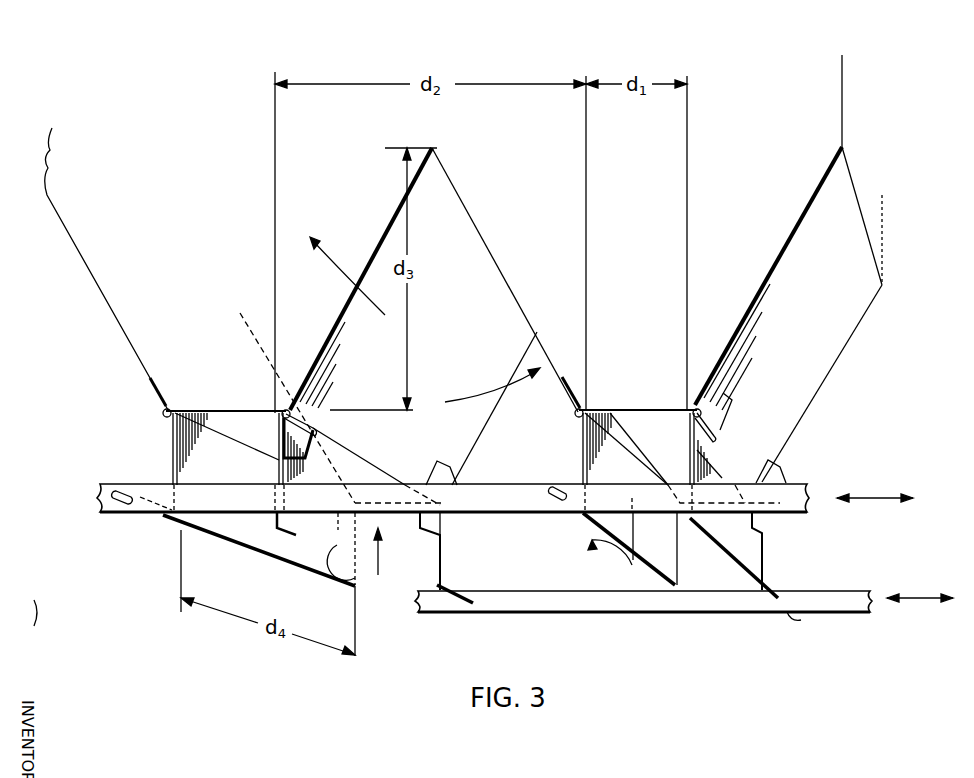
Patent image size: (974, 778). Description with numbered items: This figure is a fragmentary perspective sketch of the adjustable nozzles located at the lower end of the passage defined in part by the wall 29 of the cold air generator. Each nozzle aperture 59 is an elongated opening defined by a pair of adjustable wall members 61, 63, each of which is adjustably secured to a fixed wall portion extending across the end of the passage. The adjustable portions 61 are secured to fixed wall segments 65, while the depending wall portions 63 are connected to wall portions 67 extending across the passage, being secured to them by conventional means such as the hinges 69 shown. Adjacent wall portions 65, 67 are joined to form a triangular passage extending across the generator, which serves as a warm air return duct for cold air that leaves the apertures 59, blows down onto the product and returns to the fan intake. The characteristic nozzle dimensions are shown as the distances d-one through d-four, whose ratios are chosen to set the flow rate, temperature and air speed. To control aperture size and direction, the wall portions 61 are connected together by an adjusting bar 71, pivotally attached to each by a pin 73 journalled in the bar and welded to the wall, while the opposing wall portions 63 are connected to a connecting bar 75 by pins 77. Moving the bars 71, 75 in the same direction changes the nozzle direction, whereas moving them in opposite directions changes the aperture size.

The wall 29 is at (782, 170).
The aperture 59 is at (236, 426).
The adjustable wall member 61 is at (250, 538).
The adjustable wall member 63 is at (428, 552).
The fixed wall segment 65 is at (118, 322).
The wall portion 67 is at (353, 318).
The hinge 69 is at (153, 394).
The adjusting bar 71 is at (510, 490).
The pin 73 is at (128, 492).
The connecting bar 75 is at (530, 594).
The pin 77 is at (440, 586).